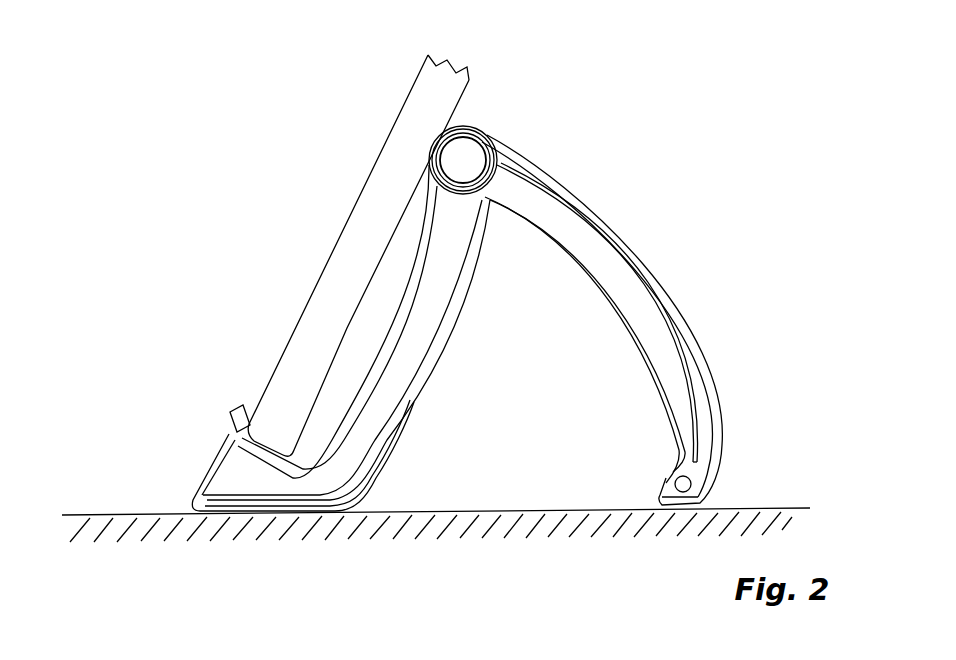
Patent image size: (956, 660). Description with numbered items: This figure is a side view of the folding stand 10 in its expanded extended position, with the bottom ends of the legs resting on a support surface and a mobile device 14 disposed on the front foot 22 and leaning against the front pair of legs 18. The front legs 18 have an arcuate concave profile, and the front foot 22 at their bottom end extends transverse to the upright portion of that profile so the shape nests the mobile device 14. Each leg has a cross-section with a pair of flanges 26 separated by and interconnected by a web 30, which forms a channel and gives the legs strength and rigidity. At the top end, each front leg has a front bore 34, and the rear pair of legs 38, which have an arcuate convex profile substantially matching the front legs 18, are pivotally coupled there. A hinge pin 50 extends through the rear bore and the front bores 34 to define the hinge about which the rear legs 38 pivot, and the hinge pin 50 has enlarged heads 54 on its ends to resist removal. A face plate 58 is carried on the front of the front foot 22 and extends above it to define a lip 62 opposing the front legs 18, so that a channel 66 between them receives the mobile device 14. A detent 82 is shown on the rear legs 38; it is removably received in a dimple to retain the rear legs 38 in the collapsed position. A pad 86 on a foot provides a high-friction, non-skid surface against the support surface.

The folding stand 10 is at (163, 467).
The mobile device 14 is at (378, 171).
The front pair of legs 18 is at (387, 437).
The front foot 22 is at (242, 476).
The flanges 26 is at (417, 288).
The web 30 is at (412, 352).
The front bore 34 is at (460, 128).
The rear pair of legs 38 is at (621, 233).
The hinge pin 50 is at (472, 153).
The enlarged heads 54 is at (472, 172).
The face plate 58 is at (223, 440).
The lip 62 is at (243, 405).
The channel 66 is at (293, 450).
The detent 82 is at (690, 484).
The pad 86 is at (256, 518).